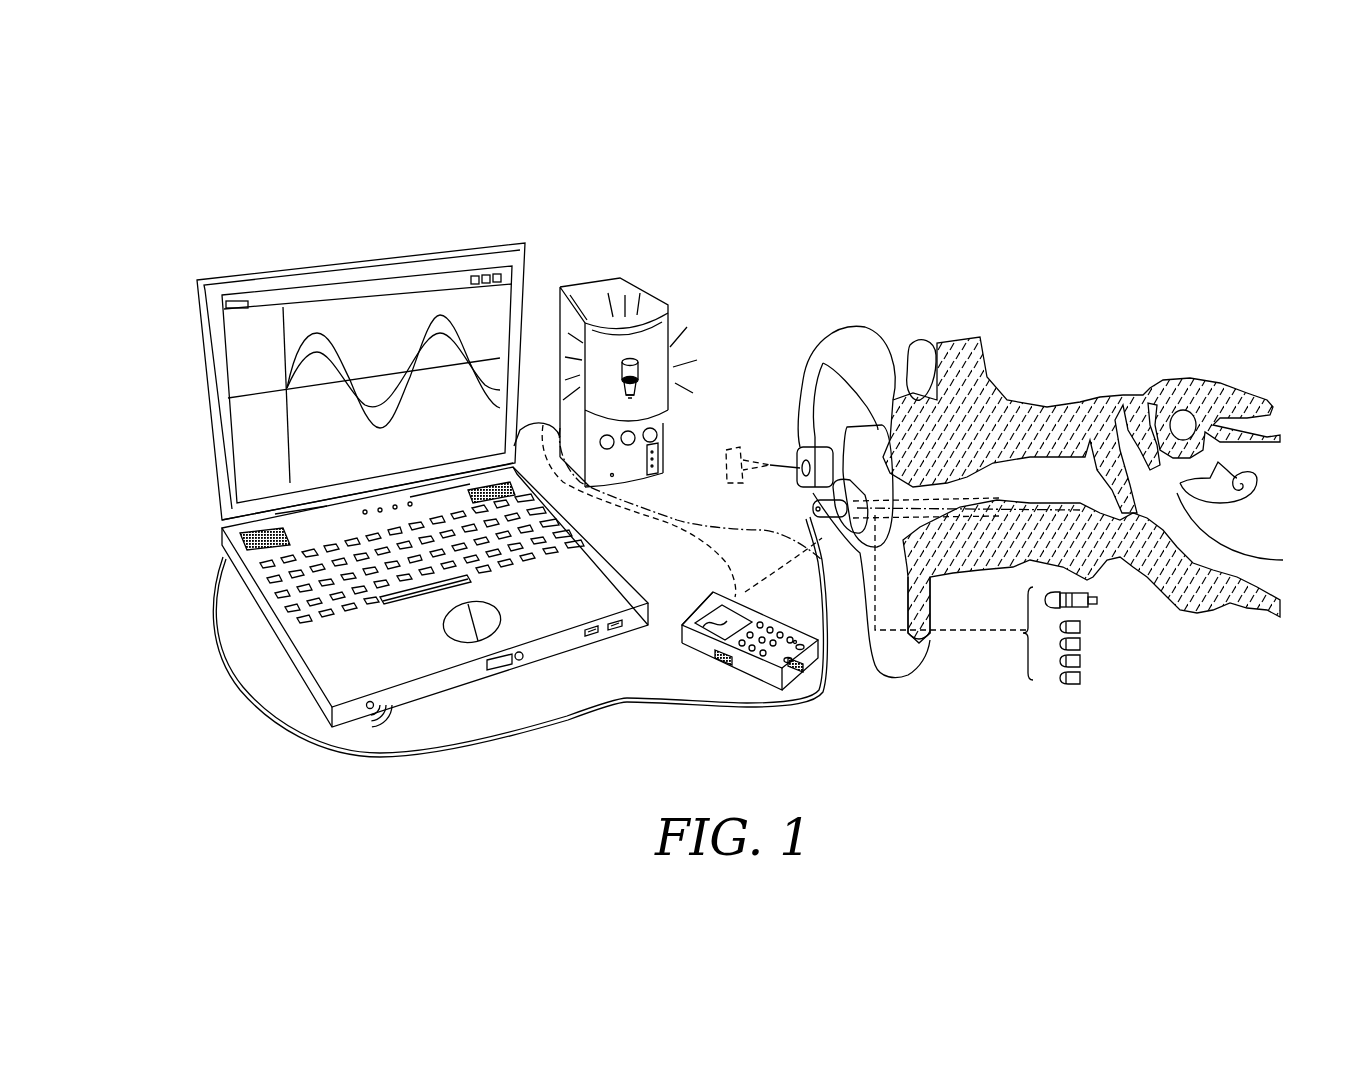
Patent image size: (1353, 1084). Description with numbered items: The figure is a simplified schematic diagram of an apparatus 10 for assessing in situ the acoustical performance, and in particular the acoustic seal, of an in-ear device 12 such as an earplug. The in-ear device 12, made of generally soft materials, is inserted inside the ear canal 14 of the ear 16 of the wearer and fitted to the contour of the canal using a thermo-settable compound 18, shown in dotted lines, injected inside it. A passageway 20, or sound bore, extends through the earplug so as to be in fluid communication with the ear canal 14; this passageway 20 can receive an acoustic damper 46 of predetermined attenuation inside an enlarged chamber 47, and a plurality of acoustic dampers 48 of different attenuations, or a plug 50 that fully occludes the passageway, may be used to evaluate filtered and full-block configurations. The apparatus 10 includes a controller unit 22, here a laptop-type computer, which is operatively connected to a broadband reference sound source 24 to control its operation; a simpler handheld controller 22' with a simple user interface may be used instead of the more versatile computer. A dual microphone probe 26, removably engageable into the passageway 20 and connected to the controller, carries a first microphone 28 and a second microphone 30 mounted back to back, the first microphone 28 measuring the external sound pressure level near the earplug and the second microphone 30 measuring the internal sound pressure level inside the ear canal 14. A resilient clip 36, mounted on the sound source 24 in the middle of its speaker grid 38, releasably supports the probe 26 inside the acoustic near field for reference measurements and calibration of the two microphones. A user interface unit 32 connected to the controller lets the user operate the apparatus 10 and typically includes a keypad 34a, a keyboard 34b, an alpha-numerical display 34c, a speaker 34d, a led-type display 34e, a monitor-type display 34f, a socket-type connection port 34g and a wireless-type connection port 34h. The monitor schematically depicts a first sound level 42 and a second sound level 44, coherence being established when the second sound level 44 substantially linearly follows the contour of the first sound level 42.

The apparatus 10 is at (938, 212).
The in-ear device 12 is at (862, 433).
The ear canal 14 is at (1040, 470).
The ear 16 is at (992, 361).
The thermo-settable compound 18 is at (737, 447).
The passageway 20 is at (980, 562).
The controller unit 22 is at (520, 612).
The controller 22' is at (689, 440).
The broadband reference sound source 24 is at (658, 295).
The dual microphone probe 26 is at (640, 367).
The first microphone 28 is at (828, 508).
The second microphone 30 is at (848, 495).
The user interface unit 32 is at (355, 228).
The keypad 34a is at (770, 628).
The keyboard 34b is at (290, 603).
The alpha-numerical display 34c is at (440, 315).
The speaker 34d is at (225, 535).
The led-type display 34e is at (658, 460).
The monitor-type display 34f is at (533, 262).
The socket-type connection port 34g is at (615, 628).
The wireless-type connection port 34h is at (367, 710).
The resilient clip 36 is at (640, 380).
The speaker grid 38 is at (647, 335).
The first sound level 42 is at (317, 333).
The second sound level 44 is at (297, 363).
The acoustic damper 46 is at (1028, 694).
The chamber 47 is at (938, 595).
The acoustic dampers 48 is at (1080, 627).
The plug 50 is at (1097, 600).